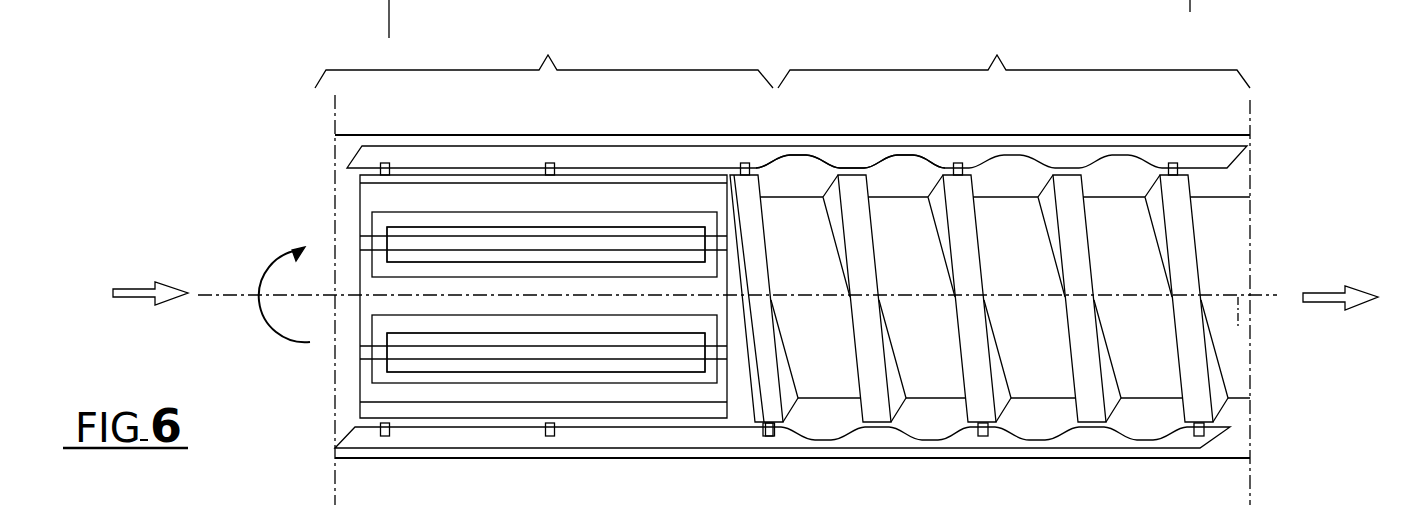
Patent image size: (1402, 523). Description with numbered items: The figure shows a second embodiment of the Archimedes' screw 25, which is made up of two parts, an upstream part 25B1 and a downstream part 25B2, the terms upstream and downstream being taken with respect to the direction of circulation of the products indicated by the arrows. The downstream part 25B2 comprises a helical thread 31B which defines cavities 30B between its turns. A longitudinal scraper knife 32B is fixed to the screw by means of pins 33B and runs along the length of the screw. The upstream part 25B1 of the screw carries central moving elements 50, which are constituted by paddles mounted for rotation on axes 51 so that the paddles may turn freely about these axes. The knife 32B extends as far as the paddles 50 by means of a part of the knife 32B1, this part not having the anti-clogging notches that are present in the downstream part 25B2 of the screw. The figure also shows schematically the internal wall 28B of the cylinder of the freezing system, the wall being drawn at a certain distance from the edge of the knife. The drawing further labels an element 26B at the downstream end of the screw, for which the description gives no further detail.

The screw 25 is at (310, 170).
The upstream part of the screw 25B1 is at (544, 57).
The downstream part of the screw 25B2 is at (1014, 57).
The internal wall of the cylinder 28B is at (1158, 146).
The cavities 30B is at (795, 196).
The thread 31B is at (867, 168).
The longitudinal scraper knife 32B is at (1068, 157).
The part of the knife 32B1 is at (617, 160).
The pins 33B is at (958, 163).
The outlet 26B is at (1238, 328).
The central moving elements 50 is at (590, 267).
The axes 51 is at (362, 240).